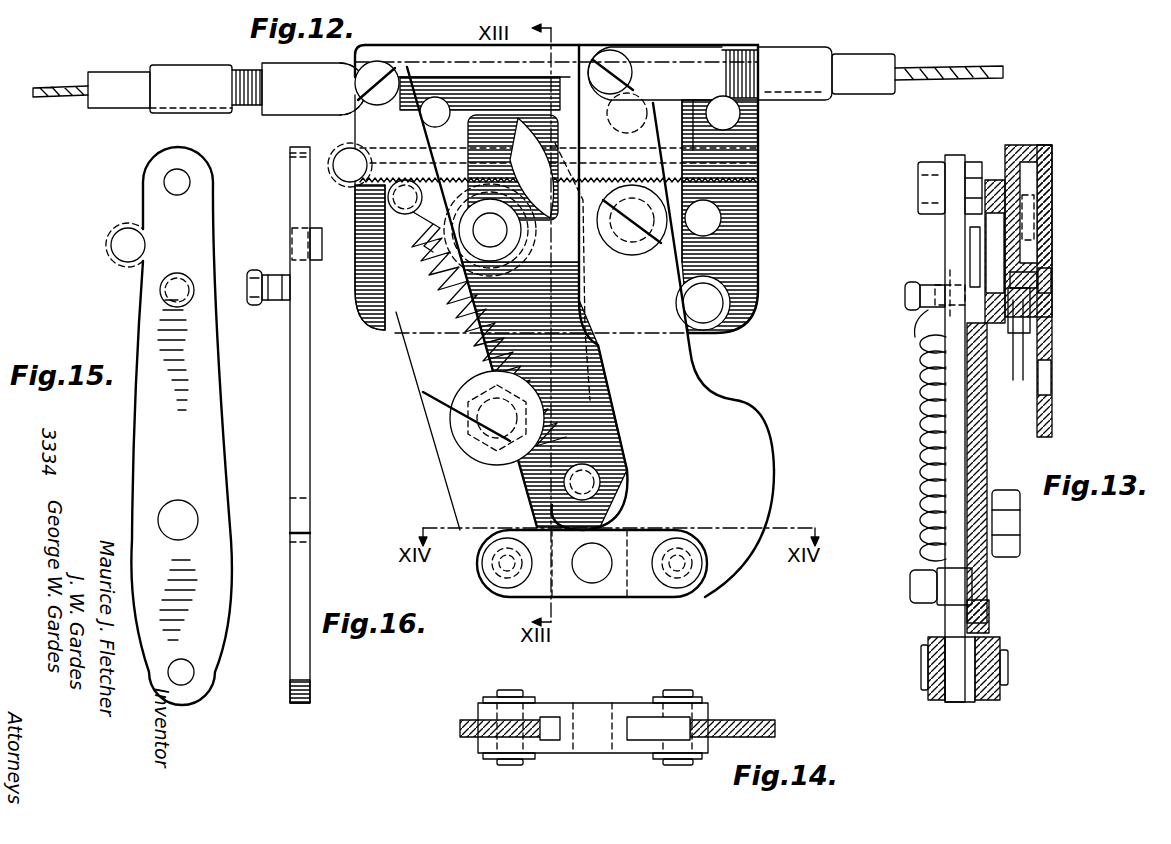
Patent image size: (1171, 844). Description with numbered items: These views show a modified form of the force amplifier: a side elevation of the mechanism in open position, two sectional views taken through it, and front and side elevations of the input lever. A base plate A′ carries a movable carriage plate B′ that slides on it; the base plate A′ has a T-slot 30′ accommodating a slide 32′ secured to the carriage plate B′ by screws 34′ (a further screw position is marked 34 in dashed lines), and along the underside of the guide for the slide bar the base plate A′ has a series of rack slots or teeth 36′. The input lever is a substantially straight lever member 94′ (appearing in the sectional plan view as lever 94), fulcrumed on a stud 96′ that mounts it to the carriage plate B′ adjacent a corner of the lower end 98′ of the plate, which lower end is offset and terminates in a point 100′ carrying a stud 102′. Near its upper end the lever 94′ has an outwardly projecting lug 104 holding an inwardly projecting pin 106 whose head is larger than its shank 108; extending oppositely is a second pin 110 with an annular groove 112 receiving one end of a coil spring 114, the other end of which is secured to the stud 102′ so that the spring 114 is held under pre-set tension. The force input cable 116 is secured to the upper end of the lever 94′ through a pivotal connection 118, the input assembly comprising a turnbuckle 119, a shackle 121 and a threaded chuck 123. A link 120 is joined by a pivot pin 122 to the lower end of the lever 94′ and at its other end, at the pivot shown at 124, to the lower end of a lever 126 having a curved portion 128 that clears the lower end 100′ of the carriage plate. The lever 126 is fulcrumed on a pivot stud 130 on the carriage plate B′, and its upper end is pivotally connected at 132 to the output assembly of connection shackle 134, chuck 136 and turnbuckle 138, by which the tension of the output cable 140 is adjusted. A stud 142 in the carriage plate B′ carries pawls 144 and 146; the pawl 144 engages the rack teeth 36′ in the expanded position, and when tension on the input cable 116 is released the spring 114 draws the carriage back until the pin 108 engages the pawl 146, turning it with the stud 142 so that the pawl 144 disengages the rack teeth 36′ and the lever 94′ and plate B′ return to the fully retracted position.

In FIG. 12, the T-slot 30′ is at (758, 130).
In FIG. 13, the T-slot 30′ is at (1028, 158).
In FIG. 12, the slide 32′ is at (462, 60).
In FIG. 13, the slide 32′ is at (1044, 174).
In FIG. 12, the screws 34′ is at (400, 62).
In FIG. 13, the screws 34′ is at (1020, 205).
In FIG. 12, the screw hole 34 is at (618, 127).
In FIG. 12, the rack teeth 36′ is at (754, 180).
In FIG. 13, the rack teeth 36′ is at (1028, 287).
In FIG. 12, the base plate A′ is at (765, 220).
In FIG. 13, the base plate A′ is at (1060, 299).
In FIG. 12, the carriage plate B′ is at (588, 362).
In FIG. 13, the carriage plate B′ is at (992, 176).
In FIG. 14, the lever plate 94 is at (460, 727).
In FIG. 12, the lever member 94′ is at (408, 346).
In FIG. 13, the lever member 94′ is at (955, 414).
In FIG. 15, the lever member 94′ is at (143, 423).
In FIG. 16, the lever member 94′ is at (302, 444).
In FIG. 12, the stud 96′ is at (430, 440).
In FIG. 13, the stud 96′ is at (945, 477).
In FIG. 12, the lower end 98′ is at (597, 443).
In FIG. 12, the point 100′ is at (622, 509).
In FIG. 13, the point 100′ is at (990, 637).
In FIG. 12, the stud 102′ is at (602, 481).
In FIG. 13, the stud 102′ is at (918, 603).
In FIG. 12, the lug 104 is at (347, 152).
In FIG. 15, the lug 104 is at (124, 258).
In FIG. 13, the pin 106 is at (968, 253).
In FIG. 16, the pin 106 is at (318, 262).
In FIG. 13, the shank portion 108 is at (966, 268).
In FIG. 15, the shank portion 108 is at (113, 239).
In FIG. 16, the shank portion 108 is at (295, 230).
In FIG. 12, the second pin 110 is at (410, 215).
In FIG. 13, the second pin 110 is at (912, 315).
In FIG. 15, the second pin 110 is at (158, 292).
In FIG. 16, the second pin 110 is at (280, 266).
In FIG. 13, the annular groove 112 is at (905, 283).
In FIG. 16, the annular groove 112 is at (262, 310).
In FIG. 12, the coil spring 114 is at (452, 307).
In FIG. 13, the coil spring 114 is at (910, 374).
In FIG. 12, the input assembly cable 116 is at (64, 84).
In FIG. 12, the pivotal connection 118 is at (350, 83).
In FIG. 13, the pivotal connection 118 is at (928, 168).
In FIG. 12, the turnbuckle 119 is at (173, 70).
In FIG. 12, the link 120 is at (607, 590).
In FIG. 13, the link 120 is at (946, 705).
In FIG. 14, the link 120 is at (587, 714).
In FIG. 12, the shackle 121 is at (282, 104).
In FIG. 13, the shackle 121 is at (930, 190).
In FIG. 12, the pivot pin 122 is at (498, 585).
In FIG. 13, the pivot pin 122 is at (932, 660).
In FIG. 14, the pivot pin 122 is at (497, 688).
In FIG. 12, the threaded chuck 123 is at (246, 70).
In FIG. 12, the roller 124 is at (698, 590).
In FIG. 14, the roller 124 is at (673, 690).
In FIG. 12, the lever 126 is at (683, 362).
In FIG. 14, the lever 126 is at (737, 720).
In FIG. 12, the curved portion 128 is at (780, 494).
In FIG. 14, the curved portion 128 is at (663, 730).
In FIG. 12, the pivot stud 130 is at (715, 228).
In FIG. 12, the pivotal connection 132 is at (608, 40).
In FIG. 12, the connection shackle 134 is at (678, 40).
In FIG. 12, the chuck 136 is at (741, 48).
In FIG. 12, the turnbuckle 138 is at (808, 40).
In FIG. 12, the cable 140 is at (953, 80).
In FIG. 12, the stud 142 is at (497, 245).
In FIG. 12, the pawl 144 is at (583, 250).
In FIG. 13, the pawl 144 is at (1013, 310).
In FIG. 12, the pawl 146 is at (526, 128).
In FIG. 13, the pawl 146 is at (970, 233).